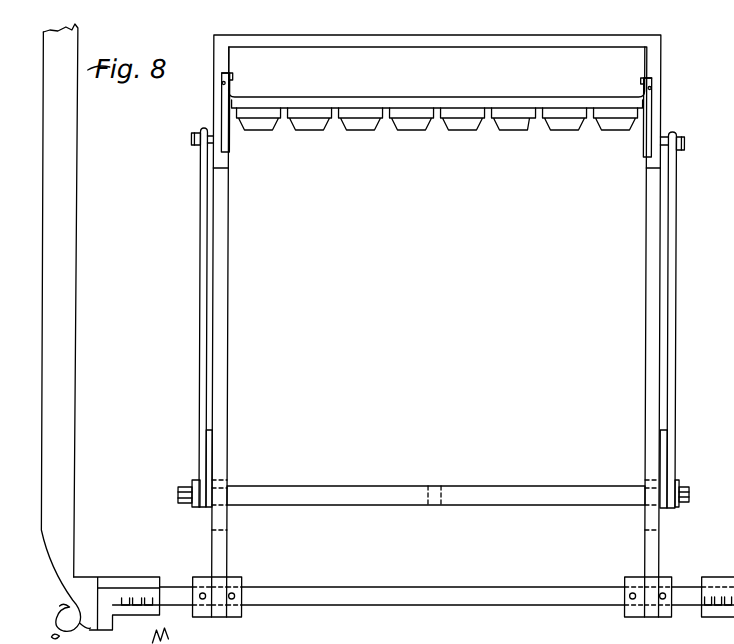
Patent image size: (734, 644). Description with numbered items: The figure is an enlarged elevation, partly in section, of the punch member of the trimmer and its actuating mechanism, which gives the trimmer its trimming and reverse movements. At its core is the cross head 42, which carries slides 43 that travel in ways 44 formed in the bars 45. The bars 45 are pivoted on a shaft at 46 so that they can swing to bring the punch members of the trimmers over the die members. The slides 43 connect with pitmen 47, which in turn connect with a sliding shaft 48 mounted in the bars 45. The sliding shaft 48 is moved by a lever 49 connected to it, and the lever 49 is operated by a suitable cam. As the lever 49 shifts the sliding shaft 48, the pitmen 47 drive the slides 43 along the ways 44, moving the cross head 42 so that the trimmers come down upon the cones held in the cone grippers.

The cross head 42 is at (483, 97).
The slides 43 is at (232, 74).
The ways 44 is at (232, 85).
The bars 45 is at (229, 206).
The shaft 46 is at (172, 588).
The pitmen 47 is at (201, 186).
The sliding shaft 48 is at (338, 466).
The lever 49 is at (194, 482).